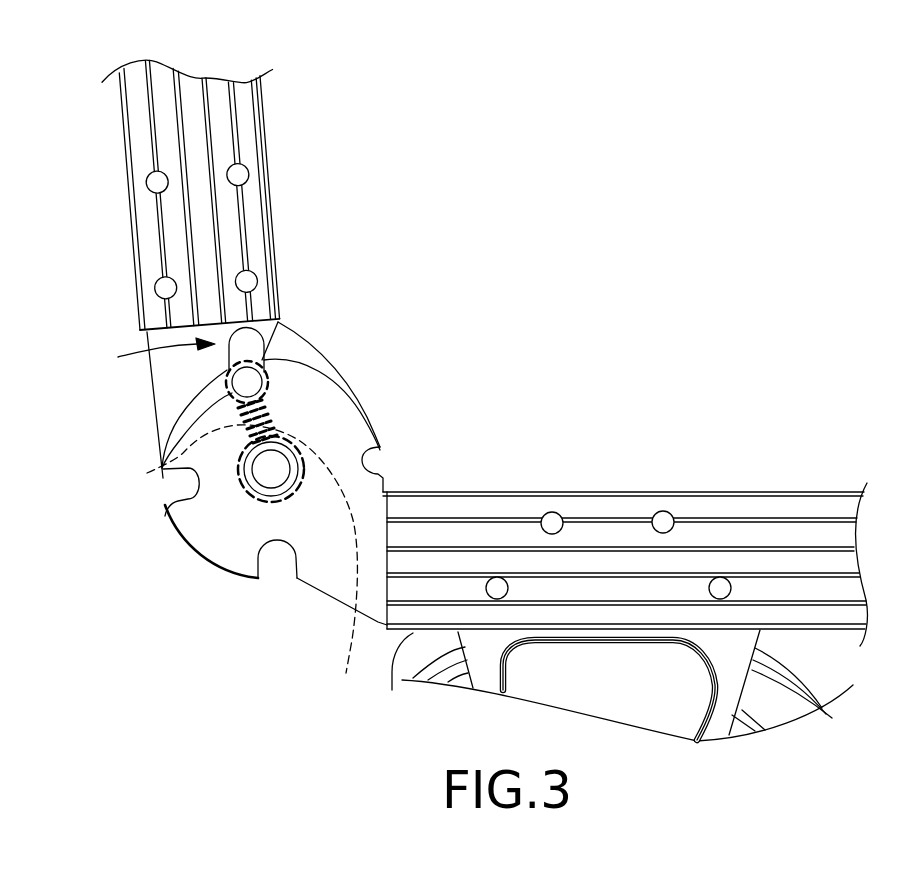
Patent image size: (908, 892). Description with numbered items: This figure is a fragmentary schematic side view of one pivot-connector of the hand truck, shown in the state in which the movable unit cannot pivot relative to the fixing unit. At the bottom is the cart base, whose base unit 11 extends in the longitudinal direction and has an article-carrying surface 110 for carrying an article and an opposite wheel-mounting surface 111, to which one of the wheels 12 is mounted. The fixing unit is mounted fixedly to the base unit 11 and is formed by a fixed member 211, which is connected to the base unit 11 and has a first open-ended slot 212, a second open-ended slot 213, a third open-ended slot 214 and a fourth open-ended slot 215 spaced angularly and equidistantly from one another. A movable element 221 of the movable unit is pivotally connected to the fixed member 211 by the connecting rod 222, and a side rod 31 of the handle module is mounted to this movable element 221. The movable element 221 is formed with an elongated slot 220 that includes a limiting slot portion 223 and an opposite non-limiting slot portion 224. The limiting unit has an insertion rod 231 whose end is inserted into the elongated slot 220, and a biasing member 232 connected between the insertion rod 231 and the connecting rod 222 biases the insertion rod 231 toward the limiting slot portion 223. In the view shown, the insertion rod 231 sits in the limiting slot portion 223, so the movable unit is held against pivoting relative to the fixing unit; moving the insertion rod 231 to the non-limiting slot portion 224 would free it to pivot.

The base unit 11 is at (763, 520).
The article-carrying surface 110 is at (513, 492).
The wheel-mounting surface 111 is at (392, 690).
The wheel 12 is at (773, 710).
The side rod 31 is at (147, 145).
The fixed member 211 is at (316, 563).
The first open-ended slot 212 is at (368, 453).
The second open-ended slot 213 is at (243, 387).
The third open-ended slot 214 is at (187, 483).
The fourth open-ended slot 215 is at (280, 555).
The elongated slot 220 is at (140, 355).
The movable element 221 is at (173, 378).
The connecting rod 222 is at (268, 474).
The limiting slot portion 223 is at (268, 385).
The non-limiting slot portion 224 is at (245, 335).
The insertion rod 231 is at (165, 450).
The biasing member 232 is at (147, 473).